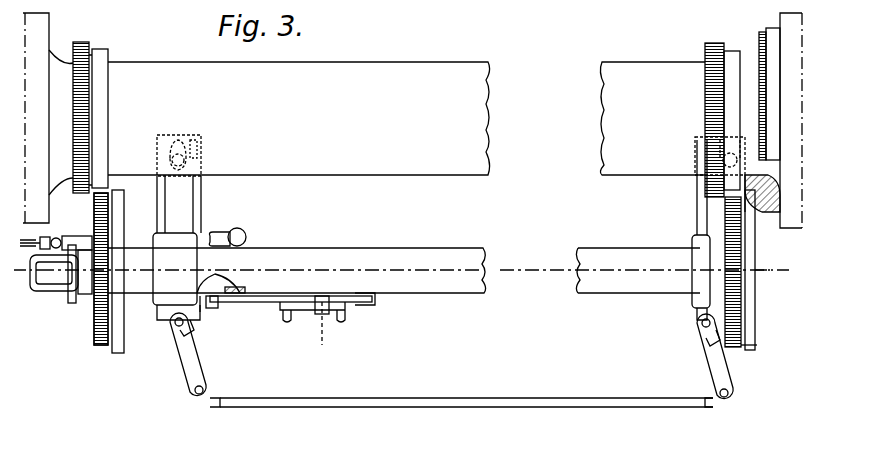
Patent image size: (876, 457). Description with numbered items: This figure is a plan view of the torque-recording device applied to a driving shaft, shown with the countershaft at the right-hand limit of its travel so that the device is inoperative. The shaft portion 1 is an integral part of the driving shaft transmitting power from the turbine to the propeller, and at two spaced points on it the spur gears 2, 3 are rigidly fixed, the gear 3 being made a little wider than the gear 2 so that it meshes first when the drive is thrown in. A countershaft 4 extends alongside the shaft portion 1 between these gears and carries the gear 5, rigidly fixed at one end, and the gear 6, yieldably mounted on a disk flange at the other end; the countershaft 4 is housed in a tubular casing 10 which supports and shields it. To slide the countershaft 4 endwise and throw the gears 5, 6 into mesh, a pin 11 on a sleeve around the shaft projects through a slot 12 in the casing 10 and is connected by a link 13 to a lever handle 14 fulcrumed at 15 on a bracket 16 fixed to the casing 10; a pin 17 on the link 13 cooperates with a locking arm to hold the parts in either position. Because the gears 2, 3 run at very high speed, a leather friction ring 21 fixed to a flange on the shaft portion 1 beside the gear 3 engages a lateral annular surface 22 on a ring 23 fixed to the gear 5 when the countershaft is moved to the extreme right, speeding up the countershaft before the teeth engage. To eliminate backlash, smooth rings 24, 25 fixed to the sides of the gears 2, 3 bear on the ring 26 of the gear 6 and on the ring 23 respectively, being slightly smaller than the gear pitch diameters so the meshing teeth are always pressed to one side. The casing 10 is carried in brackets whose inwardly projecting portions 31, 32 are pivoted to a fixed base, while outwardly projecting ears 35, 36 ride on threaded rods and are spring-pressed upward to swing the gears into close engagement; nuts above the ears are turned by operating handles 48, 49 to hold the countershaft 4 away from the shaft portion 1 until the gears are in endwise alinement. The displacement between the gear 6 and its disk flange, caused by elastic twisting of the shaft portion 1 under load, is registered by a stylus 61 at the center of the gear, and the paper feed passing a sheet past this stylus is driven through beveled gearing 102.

The shaft portion 1 is at (765, 270).
The gear 2 is at (89, 45).
The gear 3 is at (705, 47).
The countershaft 4 is at (160, 280).
The gear 5 is at (720, 342).
The gear 6 is at (96, 340).
The tubular casing 10 is at (458, 285).
The pin 11 is at (222, 296).
The slot 12 is at (209, 308).
The link 13 is at (258, 302).
The lever handle 14 is at (343, 300).
The fulcrum 15 is at (324, 346).
The bracket 16 is at (375, 305).
The pin 17 is at (292, 312).
The friction annulus 21 is at (760, 33).
The lateral annular surface 22 is at (757, 318).
The ring 23 is at (748, 355).
The driving ring 24 is at (188, 22).
The driving ring 25 is at (705, 60).
The ring 26 is at (118, 350).
The inwardly projecting portion 31 is at (190, 190).
The inwardly projecting portion 32 is at (712, 214).
The ear 35 is at (170, 322).
The ear 36 is at (698, 318).
The operating handle 48 is at (214, 406).
The operating handle 49 is at (732, 395).
The registering stylus 61 is at (90, 292).
The beveled gearing 102 is at (97, 243).